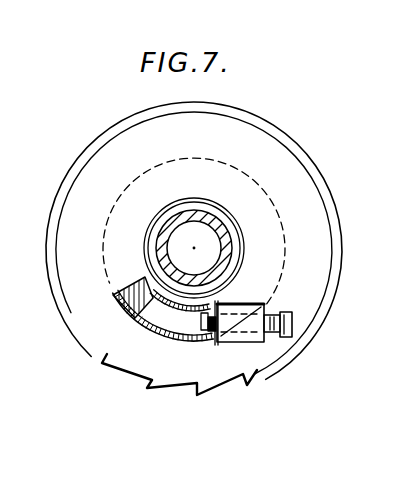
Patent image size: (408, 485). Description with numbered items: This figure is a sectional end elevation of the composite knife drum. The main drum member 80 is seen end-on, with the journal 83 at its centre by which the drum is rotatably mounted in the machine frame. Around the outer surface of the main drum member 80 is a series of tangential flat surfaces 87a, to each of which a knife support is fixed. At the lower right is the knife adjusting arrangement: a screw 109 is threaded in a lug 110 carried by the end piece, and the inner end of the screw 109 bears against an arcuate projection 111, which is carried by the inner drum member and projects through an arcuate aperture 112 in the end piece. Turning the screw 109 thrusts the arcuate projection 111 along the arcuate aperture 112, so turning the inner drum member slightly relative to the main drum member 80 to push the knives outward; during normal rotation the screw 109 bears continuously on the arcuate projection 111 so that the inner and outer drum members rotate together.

The main drum member 80 is at (292, 134).
The journal 83 is at (180, 220).
The tangential flat surfaces 87a is at (160, 387).
The screw 109 is at (292, 325).
The lug 110 is at (250, 342).
The arcuate projection 111 is at (177, 320).
The arcuate aperture 112 is at (113, 294).